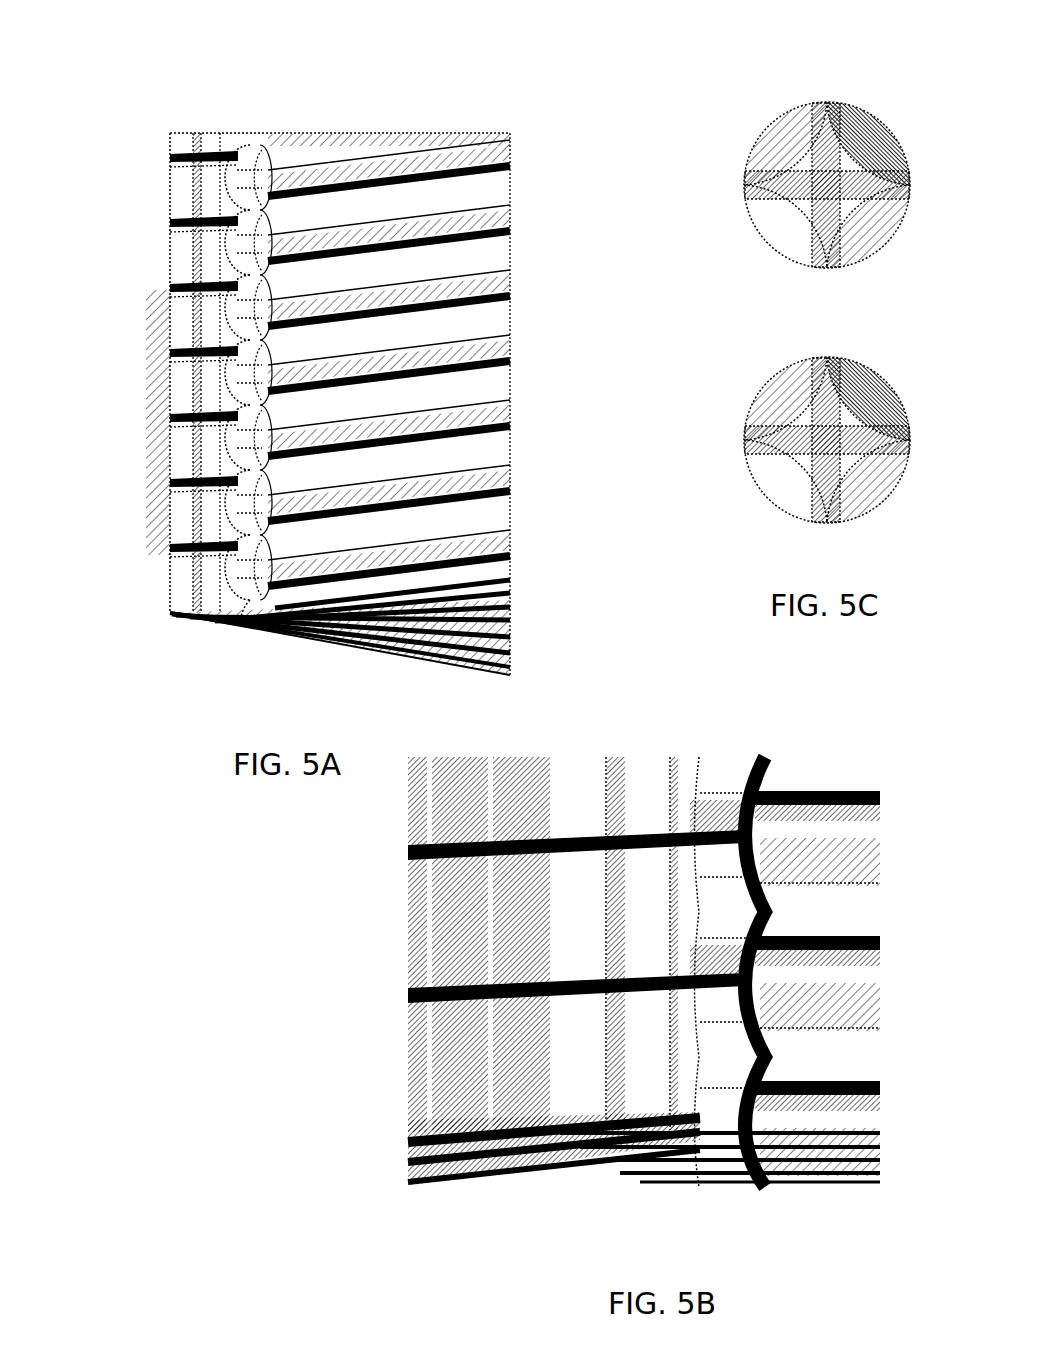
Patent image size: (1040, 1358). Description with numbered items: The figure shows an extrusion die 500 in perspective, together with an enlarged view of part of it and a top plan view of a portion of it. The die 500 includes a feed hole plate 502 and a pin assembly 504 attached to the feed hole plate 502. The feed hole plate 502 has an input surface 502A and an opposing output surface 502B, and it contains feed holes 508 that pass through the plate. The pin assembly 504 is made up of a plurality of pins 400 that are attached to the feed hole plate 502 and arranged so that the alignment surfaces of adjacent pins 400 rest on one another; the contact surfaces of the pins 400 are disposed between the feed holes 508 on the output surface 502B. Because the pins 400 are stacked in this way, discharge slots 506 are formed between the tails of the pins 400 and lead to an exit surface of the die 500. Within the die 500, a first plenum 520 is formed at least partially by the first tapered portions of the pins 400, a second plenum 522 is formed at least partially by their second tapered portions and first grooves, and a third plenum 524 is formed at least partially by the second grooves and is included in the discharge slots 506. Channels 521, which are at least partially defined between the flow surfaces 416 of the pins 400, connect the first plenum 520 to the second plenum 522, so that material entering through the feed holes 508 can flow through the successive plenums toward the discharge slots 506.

In FIG. 5A, the pin 400 is at (183, 322).
In FIG. 5C, the flow surface 416 is at (785, 150).
In FIG. 5A, the die 500 is at (255, 705).
In FIG. 5B, the die 500 is at (682, 1245).
In FIG. 5A, the feed hole plate 502 is at (510, 96).
In FIG. 5A, the input surface 502A is at (560, 120).
In FIG. 5A, the output surface 502B is at (255, 473).
In FIG. 5A, the pin assembly 504 is at (272, 118).
In FIG. 5C, the discharge slot 506 is at (783, 185).
In FIG. 5B, the discharge slot 506 is at (410, 995).
In FIG. 5A, the feed hole 508 is at (470, 320).
In FIG. 5C, the feed hole 508 is at (747, 408).
In FIG. 5B, the first plenum 520 is at (760, 747).
In FIG. 5B, the channel 521 is at (728, 987).
In FIG. 5B, the second plenum 522 is at (683, 747).
In FIG. 5B, the third plenum 524 is at (608, 747).